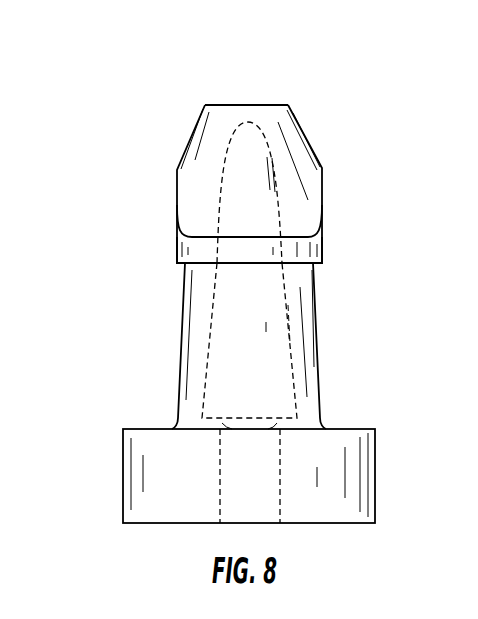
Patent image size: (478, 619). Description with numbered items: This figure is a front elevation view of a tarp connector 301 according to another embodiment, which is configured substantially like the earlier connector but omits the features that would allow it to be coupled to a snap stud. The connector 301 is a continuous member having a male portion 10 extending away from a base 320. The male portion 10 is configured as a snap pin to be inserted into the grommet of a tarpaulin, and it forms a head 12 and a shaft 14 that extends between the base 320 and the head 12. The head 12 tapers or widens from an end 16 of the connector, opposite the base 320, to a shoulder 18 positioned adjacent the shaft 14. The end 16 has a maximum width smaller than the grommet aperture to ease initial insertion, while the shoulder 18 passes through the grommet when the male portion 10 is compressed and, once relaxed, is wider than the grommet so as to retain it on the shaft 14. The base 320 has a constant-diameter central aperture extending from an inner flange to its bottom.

The connector 301 is at (317, 53).
The male portion 10 is at (117, 159).
The head 12 is at (295, 148).
The end 16 is at (289, 104).
The shoulder 18 is at (307, 252).
The shaft 14 is at (295, 337).
The base 320 is at (95, 463).